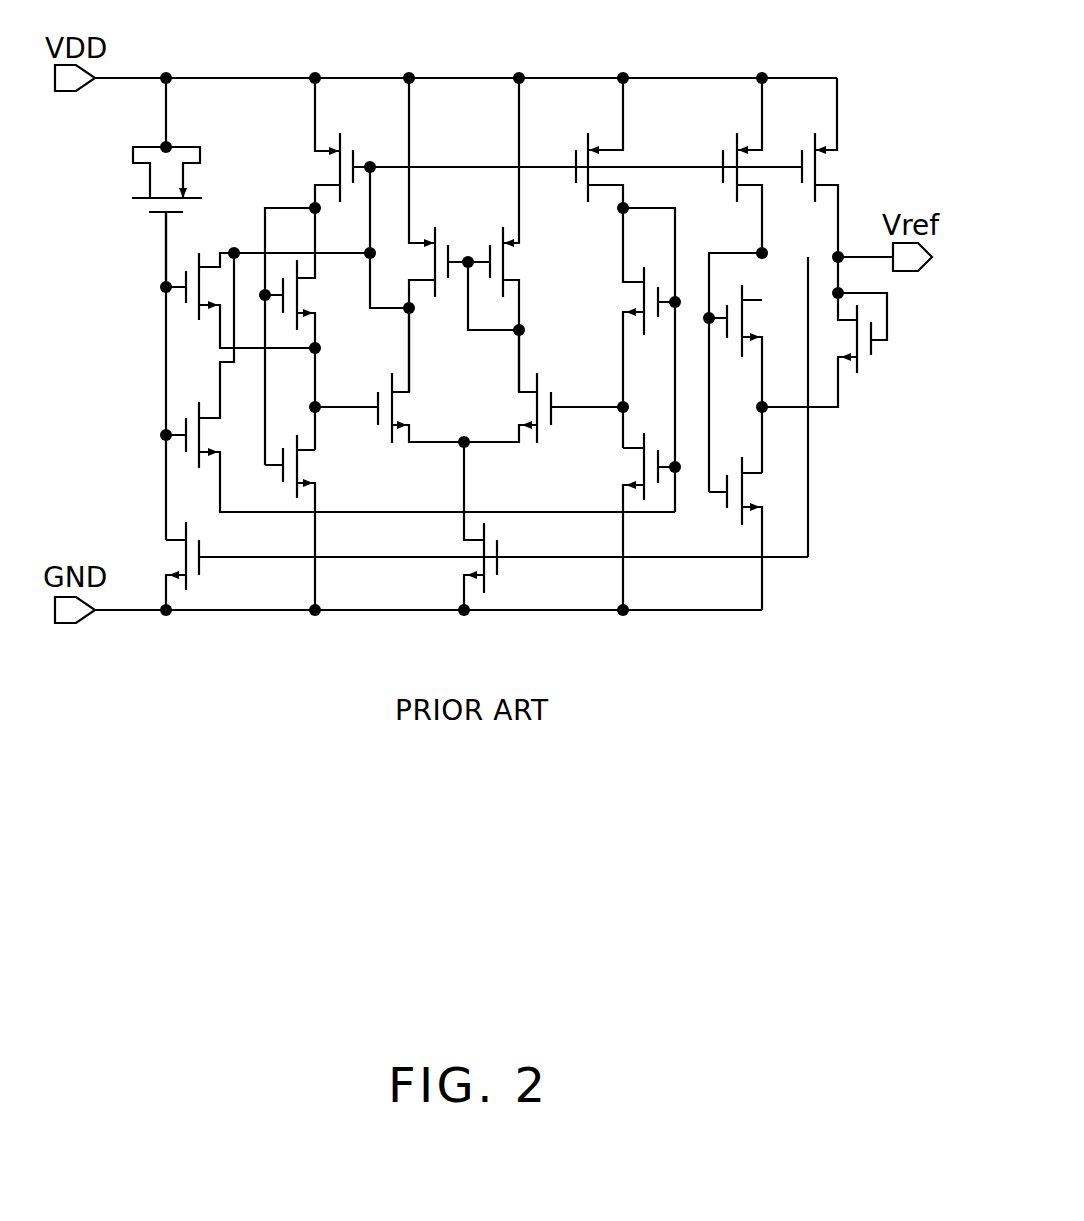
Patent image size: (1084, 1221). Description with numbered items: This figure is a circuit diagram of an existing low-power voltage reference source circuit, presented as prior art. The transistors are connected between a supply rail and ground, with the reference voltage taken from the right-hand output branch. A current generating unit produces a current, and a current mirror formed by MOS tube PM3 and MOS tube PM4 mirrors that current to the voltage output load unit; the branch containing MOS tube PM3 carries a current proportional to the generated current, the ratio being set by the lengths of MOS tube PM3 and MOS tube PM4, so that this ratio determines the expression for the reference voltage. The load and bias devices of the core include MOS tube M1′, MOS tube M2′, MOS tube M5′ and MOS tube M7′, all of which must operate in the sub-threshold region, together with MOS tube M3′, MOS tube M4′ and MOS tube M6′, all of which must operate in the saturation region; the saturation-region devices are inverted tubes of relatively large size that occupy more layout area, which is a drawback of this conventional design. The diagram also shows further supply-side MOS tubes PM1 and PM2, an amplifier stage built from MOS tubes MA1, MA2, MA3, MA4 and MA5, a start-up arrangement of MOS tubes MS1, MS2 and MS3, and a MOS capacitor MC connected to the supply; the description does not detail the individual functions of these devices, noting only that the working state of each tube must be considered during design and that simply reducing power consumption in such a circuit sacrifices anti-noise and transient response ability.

The MOS capacitor MC is at (172, 182).
The PMOS transistor PM1 is at (308, 143).
The PMOS transistor PM2 is at (585, 143).
The MOS tube PM3 is at (732, 165).
The MOS tube PM4 is at (850, 167).
The amplifier input transistor MA1 is at (389, 375).
The amplifier input transistor MA2 is at (543, 389).
The amplifier load transistor MA3 is at (421, 235).
The amplifier load transistor MA4 is at (516, 235).
The amplifier tail transistor MA5 is at (447, 526).
The start-up transistor MS1 is at (465, 566).
The start-up transistor MS2 is at (235, 300).
The start-up transistor MS3 is at (387, 379).
The MOS tube M1′ is at (310, 329).
The MOS tube M2′ is at (632, 328).
The MOS tube M3′ is at (313, 522).
The MOS tube M4′ is at (632, 521).
The MOS tube M5′ is at (750, 379).
The MOS tube M6′ is at (757, 533).
The MOS tube M7′ is at (836, 335).